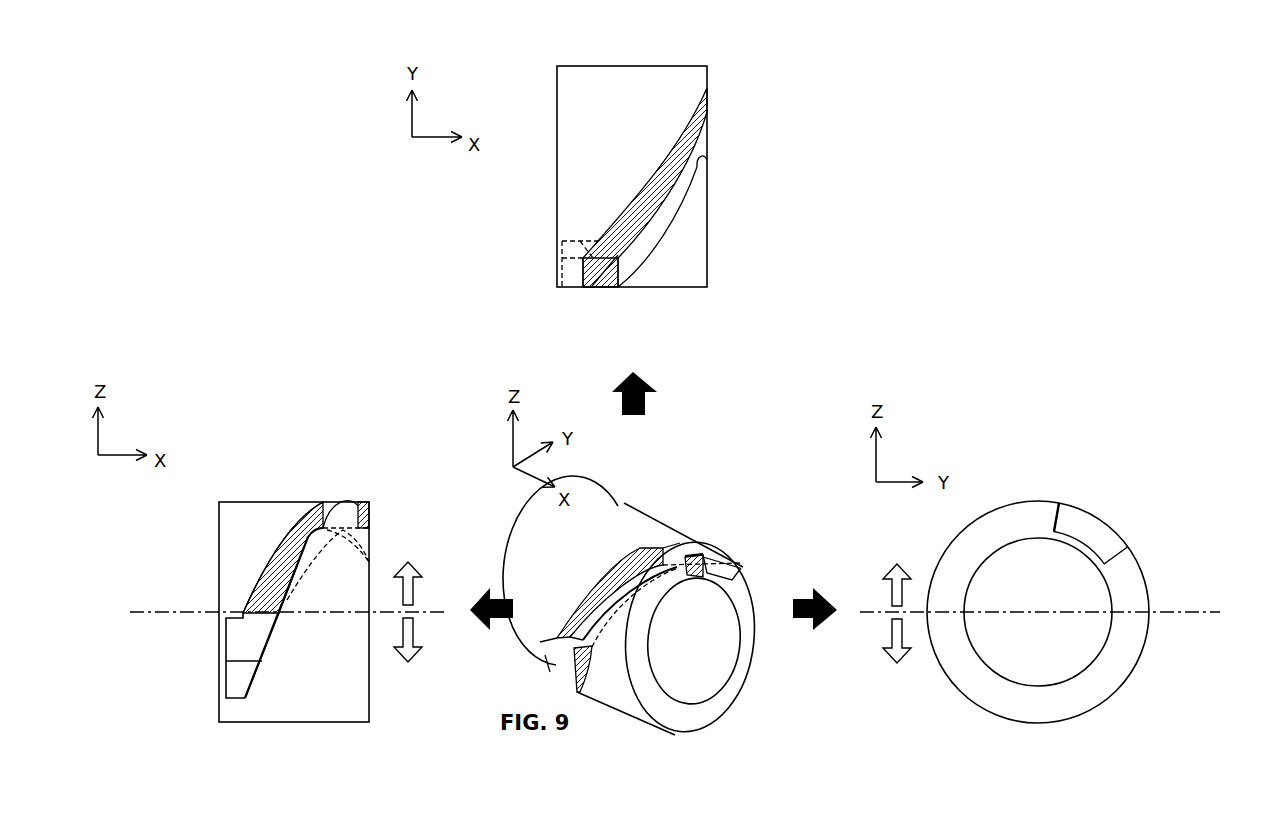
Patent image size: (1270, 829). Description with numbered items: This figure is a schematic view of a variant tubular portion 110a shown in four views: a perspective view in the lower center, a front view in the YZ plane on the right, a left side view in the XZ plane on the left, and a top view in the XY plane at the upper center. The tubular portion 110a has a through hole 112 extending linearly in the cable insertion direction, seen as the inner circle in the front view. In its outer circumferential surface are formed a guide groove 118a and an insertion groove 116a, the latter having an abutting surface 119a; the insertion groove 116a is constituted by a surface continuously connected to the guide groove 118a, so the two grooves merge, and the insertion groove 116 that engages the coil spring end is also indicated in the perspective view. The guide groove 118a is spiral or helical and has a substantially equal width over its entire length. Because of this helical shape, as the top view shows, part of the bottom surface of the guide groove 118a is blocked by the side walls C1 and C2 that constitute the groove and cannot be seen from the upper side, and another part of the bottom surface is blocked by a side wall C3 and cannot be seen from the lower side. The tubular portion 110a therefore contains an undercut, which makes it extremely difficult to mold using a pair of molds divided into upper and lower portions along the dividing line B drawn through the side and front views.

The tubular portion 110a is at (740, 65).
The guide groove 118a is at (683, 155).
The side wall C1 is at (703, 163).
The side wall C2 is at (595, 287).
The side wall C3 is at (608, 287).
The insertion groove 116a is at (240, 645).
The abutting surface 119a is at (238, 682).
The insertion groove 116 is at (547, 648).
The through hole 112 is at (1014, 677).
The dividing line B is at (178, 612).